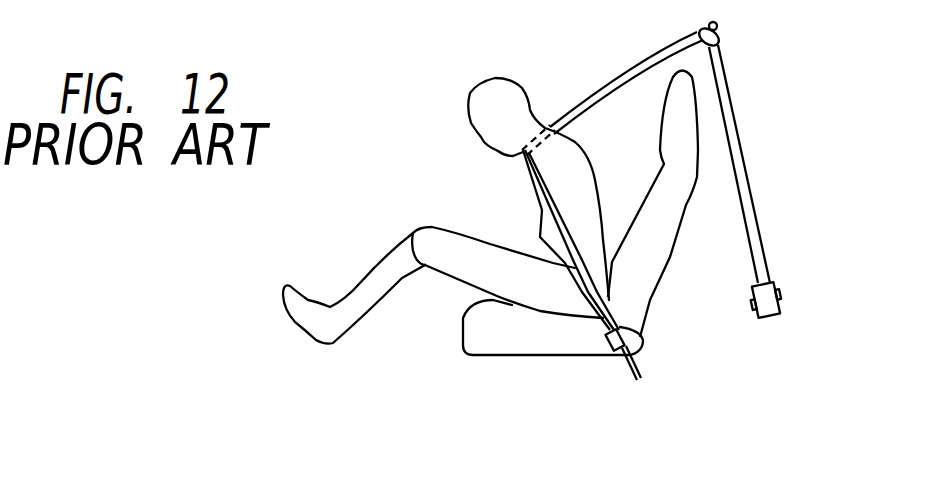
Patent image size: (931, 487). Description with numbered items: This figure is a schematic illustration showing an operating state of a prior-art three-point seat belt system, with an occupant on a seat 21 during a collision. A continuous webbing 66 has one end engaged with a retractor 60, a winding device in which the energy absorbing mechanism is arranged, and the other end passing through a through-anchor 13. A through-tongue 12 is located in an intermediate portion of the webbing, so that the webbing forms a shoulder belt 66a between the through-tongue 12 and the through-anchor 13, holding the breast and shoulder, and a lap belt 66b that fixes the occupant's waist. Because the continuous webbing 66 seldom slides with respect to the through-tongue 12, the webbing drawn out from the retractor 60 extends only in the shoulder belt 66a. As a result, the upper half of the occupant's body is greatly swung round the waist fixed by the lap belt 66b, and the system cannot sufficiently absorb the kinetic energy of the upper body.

The continuous webbing 66 is at (596, 91).
The shoulder belt 66a is at (542, 212).
The lap belt 66b is at (536, 238).
The through-anchor 13 is at (723, 40).
The retractor 60 is at (787, 298).
The seat 21 is at (671, 259).
The through-tongue 12 is at (608, 345).